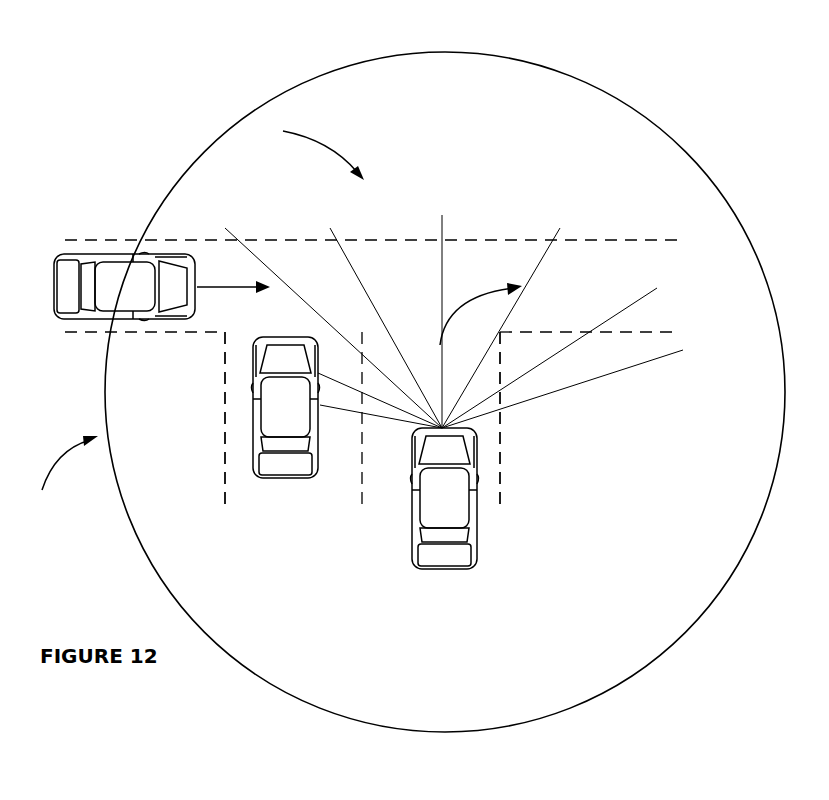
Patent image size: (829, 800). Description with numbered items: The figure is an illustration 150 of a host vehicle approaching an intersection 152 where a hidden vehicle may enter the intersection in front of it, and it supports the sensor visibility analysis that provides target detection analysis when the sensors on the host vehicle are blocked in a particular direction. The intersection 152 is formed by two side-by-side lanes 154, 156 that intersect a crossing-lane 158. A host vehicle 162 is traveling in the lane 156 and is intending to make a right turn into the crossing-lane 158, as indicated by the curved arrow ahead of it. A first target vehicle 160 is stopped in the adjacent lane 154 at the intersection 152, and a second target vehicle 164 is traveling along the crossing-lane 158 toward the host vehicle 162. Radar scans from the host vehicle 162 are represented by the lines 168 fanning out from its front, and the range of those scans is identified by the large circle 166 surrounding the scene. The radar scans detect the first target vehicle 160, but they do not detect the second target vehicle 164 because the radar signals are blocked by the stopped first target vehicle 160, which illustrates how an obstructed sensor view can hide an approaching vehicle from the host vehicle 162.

The illustration 150 is at (371, 320).
The intersection 152 is at (63, 476).
The lane 154 is at (225, 470).
The lane 156 is at (500, 436).
The crossing-lane 158 is at (605, 240).
The first target vehicle 160 is at (253, 407).
The host vehicle 162 is at (475, 543).
The second target vehicle 164 is at (128, 257).
The circle 166 is at (313, 78).
The lines 168 is at (656, 292).